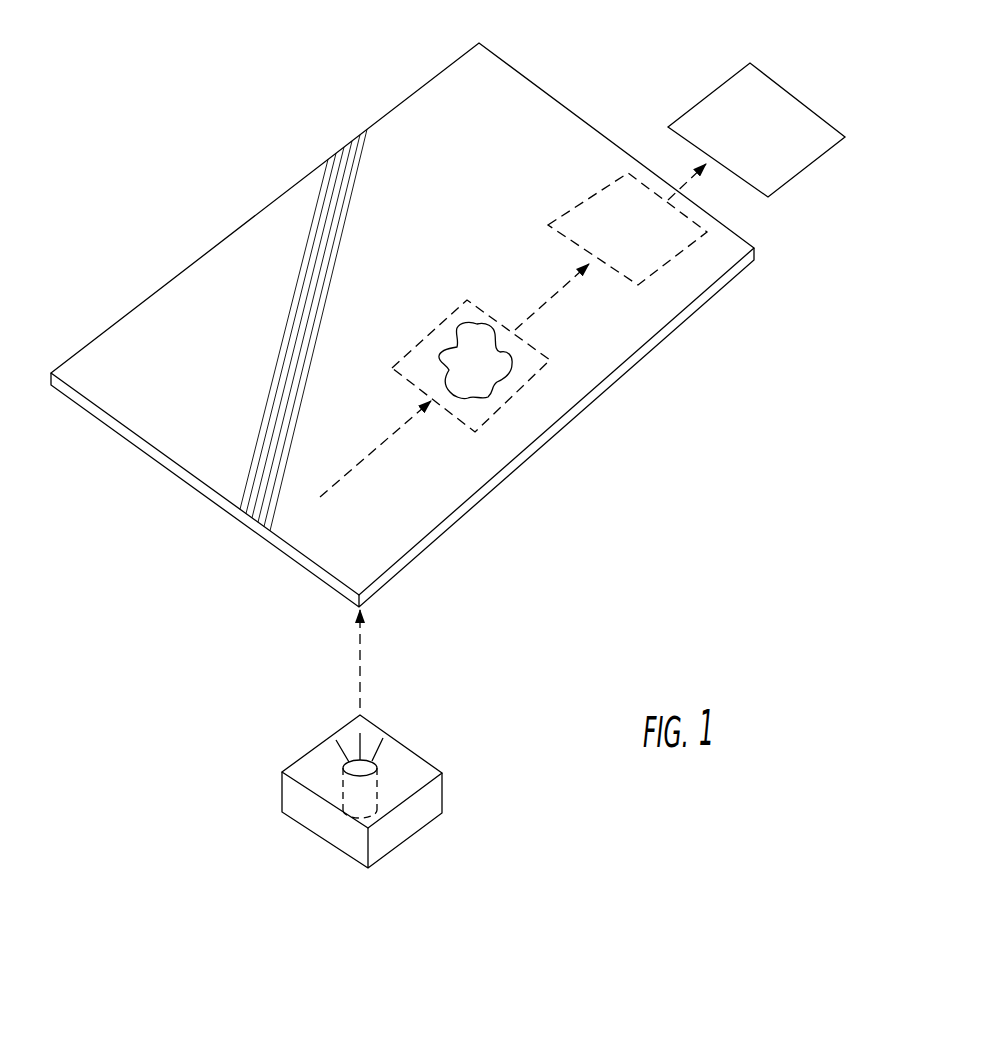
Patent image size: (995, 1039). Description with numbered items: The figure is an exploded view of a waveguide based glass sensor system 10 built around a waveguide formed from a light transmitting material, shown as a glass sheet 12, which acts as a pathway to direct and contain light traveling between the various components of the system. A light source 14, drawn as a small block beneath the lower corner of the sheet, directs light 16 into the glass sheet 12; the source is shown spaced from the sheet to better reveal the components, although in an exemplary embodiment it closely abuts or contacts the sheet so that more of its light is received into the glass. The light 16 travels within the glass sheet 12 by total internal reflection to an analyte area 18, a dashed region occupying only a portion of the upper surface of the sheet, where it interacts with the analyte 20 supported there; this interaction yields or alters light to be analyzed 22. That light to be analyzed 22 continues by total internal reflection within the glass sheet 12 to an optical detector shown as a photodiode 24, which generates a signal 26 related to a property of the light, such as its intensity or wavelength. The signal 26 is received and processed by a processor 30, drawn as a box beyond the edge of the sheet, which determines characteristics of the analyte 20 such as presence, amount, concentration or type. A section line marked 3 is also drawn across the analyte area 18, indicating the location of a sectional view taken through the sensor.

The waveguide based glass sensor system 10 is at (657, 100).
The glass sheet 12 is at (500, 82).
The light source 14 is at (408, 760).
The light 16 is at (373, 450).
The analyte area 18 is at (522, 398).
The analyte 20 is at (480, 340).
The light to be analyzed 22 is at (541, 305).
The photodiode 24 is at (660, 250).
The signal 26 is at (697, 173).
The processor 30 is at (789, 93).
The section line 3- 3 is at (428, 352).